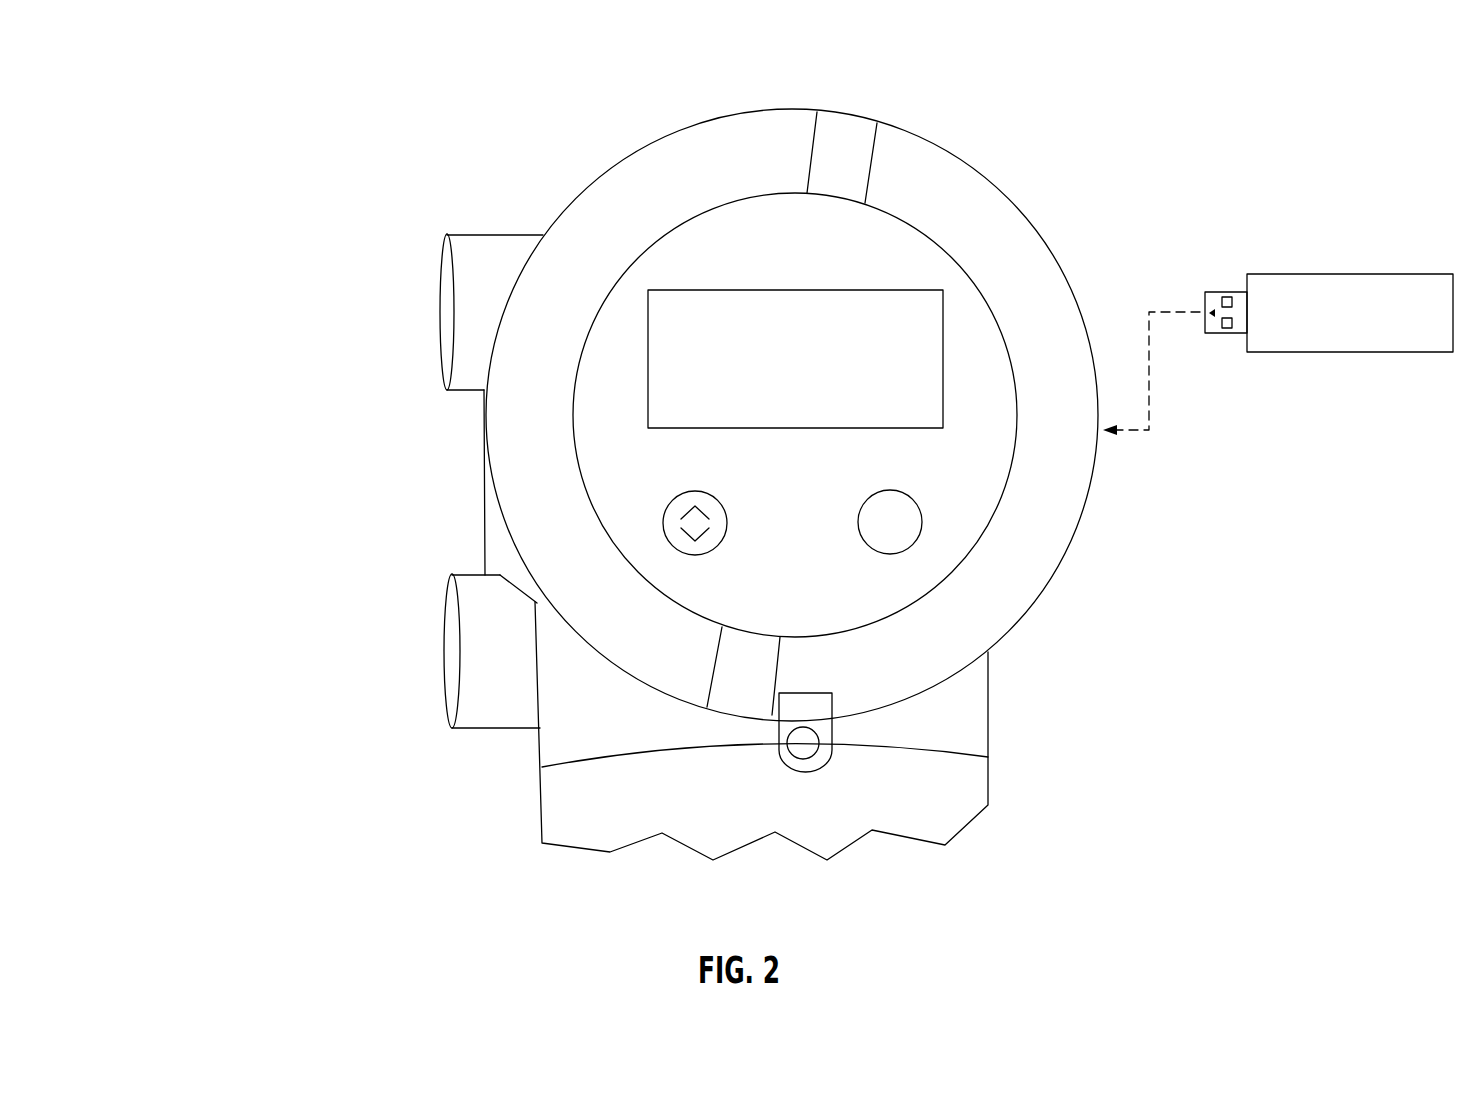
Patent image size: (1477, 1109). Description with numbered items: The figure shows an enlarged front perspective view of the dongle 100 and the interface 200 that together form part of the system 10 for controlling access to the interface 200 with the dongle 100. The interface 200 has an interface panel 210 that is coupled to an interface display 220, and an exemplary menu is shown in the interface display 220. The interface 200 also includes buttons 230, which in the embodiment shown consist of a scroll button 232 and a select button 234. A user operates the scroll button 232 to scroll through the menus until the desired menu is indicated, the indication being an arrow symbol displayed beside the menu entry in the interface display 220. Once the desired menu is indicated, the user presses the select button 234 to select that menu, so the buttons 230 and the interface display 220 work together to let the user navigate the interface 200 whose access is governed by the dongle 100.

The system 10 is at (158, 110).
The dongle 100 is at (1322, 352).
The interface 200 is at (1038, 185).
The interface panel 210 is at (765, 262).
The interface display 220 is at (843, 290).
The buttons 230 is at (945, 530).
The scroll button 232 is at (727, 525).
The select button 234 is at (857, 525).